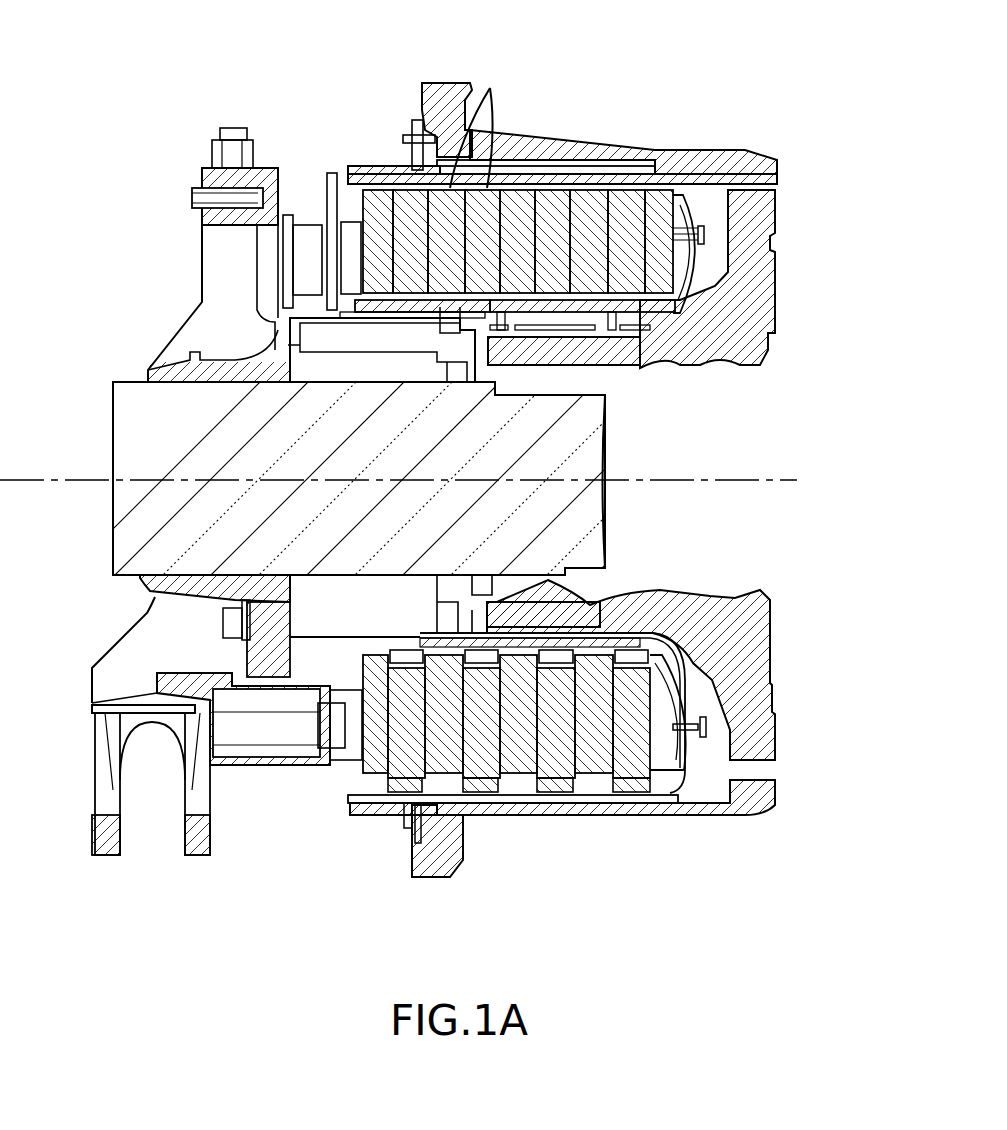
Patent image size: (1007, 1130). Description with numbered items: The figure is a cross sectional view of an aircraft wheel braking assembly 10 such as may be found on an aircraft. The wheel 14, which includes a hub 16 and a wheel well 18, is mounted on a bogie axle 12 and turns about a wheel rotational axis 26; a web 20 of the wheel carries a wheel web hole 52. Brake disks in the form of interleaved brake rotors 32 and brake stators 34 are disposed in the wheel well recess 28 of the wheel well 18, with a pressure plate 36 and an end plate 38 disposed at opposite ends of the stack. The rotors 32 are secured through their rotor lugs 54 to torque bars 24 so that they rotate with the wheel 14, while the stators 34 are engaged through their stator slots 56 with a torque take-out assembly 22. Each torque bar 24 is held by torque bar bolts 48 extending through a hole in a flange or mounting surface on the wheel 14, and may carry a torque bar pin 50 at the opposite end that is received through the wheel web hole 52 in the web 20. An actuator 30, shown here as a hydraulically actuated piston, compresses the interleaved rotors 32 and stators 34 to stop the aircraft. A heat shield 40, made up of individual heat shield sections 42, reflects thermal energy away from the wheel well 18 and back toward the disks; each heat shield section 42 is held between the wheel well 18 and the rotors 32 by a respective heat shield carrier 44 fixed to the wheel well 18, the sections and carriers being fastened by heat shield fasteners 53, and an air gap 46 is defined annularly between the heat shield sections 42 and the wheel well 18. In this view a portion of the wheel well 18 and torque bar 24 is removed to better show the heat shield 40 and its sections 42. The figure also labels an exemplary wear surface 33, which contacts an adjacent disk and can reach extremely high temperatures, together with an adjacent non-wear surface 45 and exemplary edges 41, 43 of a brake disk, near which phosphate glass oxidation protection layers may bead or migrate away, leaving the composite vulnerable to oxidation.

The aircraft wheel braking assembly 10 is at (806, 84).
The bogie axle 12 is at (95, 430).
The wheel 14 is at (630, 128).
The hub 16 is at (578, 345).
The wheel well 18 is at (762, 158).
The web 20 is at (736, 250).
The torque take-out assembly 22 is at (410, 330).
The torque bar 24 is at (362, 166).
The wheel rotational axis 26 is at (672, 478).
The wheel well recess 28 is at (722, 237).
The actuator 30 is at (265, 784).
The brake rotor 32 is at (398, 256).
The wear surface 33 is at (655, 250).
The brake stator 34 is at (434, 256).
The pressure plate 36 is at (366, 256).
The end plate 38 is at (647, 256).
The heat shield 40 is at (378, 834).
The edge 41 is at (618, 302).
The heat shield section 42 is at (552, 160).
The edge 43 is at (668, 302).
The heat shield carrier 44 is at (420, 812).
The non-wear surface 45 is at (648, 300).
The air gap 46 is at (450, 135).
The torque bar bolt 48 is at (418, 152).
The torque bar pin 50 is at (728, 202).
The wheel web hole 52 is at (776, 205).
The heat shield fastener 53 is at (410, 803).
The rotor lug 54 is at (486, 119).
The stator slot 56 is at (463, 325).